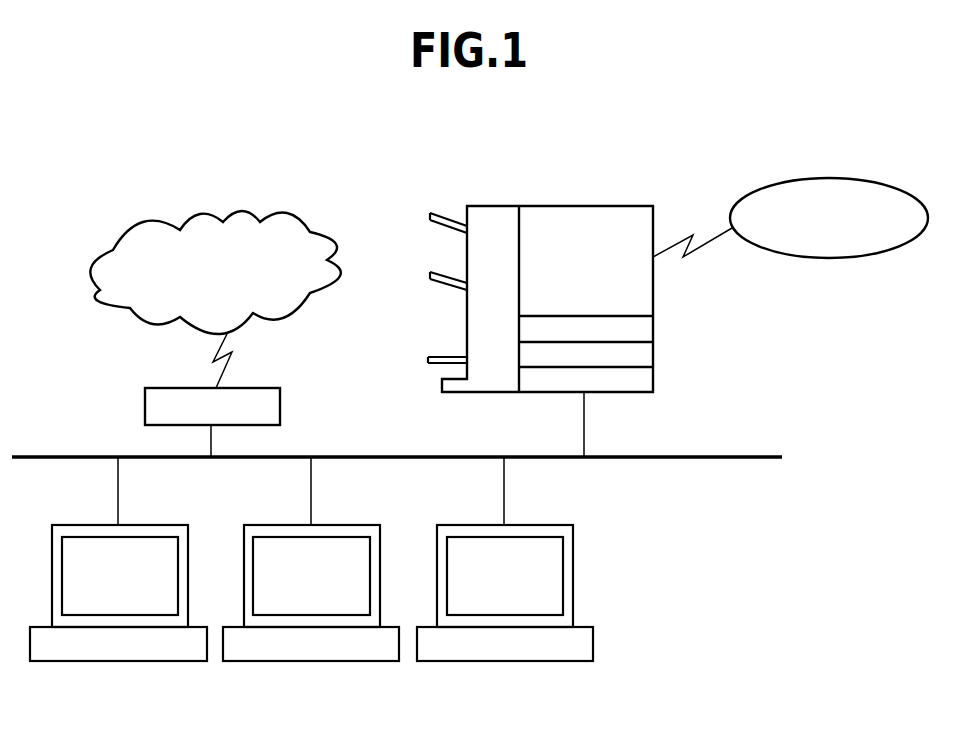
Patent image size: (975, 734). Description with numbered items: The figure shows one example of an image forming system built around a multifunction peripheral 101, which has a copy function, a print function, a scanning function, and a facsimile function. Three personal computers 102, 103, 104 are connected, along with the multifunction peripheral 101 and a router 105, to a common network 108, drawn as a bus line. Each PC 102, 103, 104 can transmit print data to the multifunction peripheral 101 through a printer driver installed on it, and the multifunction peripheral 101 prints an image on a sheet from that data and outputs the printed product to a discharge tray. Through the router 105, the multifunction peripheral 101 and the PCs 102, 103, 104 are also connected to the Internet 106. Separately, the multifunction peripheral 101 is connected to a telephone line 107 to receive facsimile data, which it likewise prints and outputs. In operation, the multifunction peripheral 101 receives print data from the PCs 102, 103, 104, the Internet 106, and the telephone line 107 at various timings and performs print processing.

The multifunction peripheral 101 is at (572, 206).
The personal computer 102 is at (117, 662).
The personal computer 103 is at (310, 662).
The personal computer 104 is at (504, 662).
The router 105 is at (145, 405).
The Internet 106 is at (243, 209).
The telephone line 107 is at (830, 178).
The network 108 is at (718, 456).